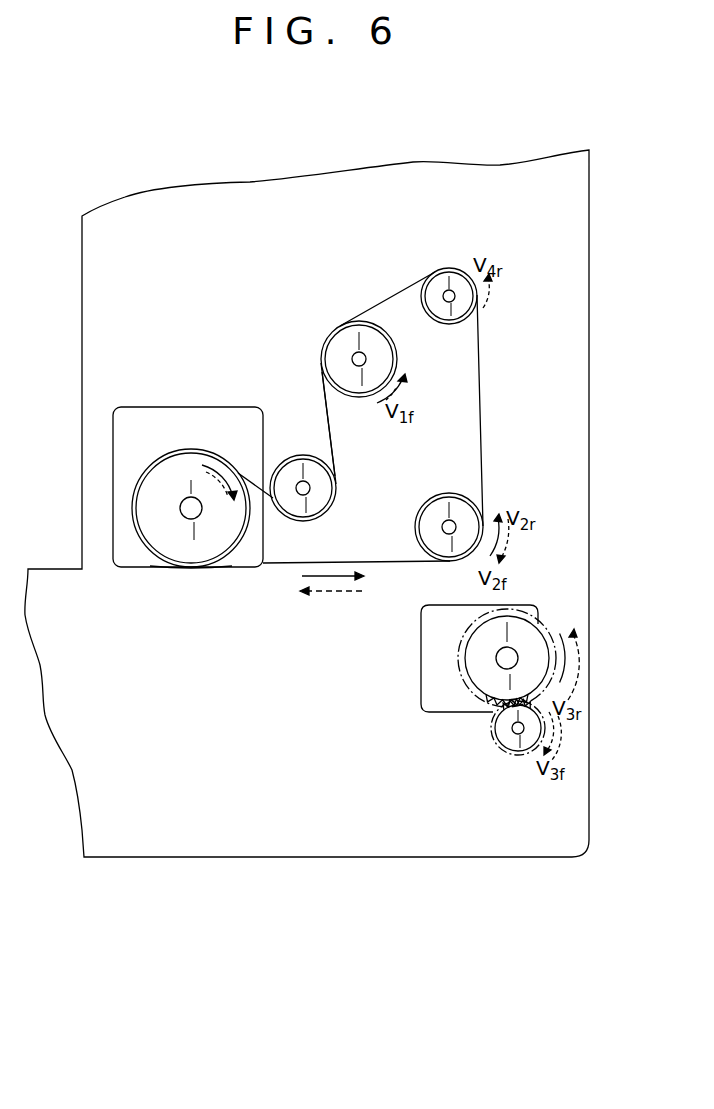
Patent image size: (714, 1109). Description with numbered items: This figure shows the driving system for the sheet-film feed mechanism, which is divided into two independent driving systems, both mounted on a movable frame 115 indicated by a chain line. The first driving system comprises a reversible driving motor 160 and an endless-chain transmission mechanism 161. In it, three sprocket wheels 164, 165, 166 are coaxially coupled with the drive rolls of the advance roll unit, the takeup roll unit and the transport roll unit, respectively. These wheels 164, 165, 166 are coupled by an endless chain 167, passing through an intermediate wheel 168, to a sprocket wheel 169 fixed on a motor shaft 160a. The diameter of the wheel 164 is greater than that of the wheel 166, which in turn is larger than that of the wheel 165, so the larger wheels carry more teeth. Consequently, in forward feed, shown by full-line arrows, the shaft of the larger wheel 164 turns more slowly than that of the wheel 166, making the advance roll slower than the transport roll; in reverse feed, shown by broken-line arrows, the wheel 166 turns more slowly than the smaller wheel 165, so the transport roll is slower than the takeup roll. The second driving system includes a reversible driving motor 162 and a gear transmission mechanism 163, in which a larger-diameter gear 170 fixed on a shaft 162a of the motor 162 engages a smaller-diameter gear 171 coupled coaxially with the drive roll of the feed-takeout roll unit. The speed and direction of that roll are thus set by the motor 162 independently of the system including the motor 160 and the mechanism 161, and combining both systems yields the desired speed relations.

The movable frame 115 is at (590, 460).
The reversible driving motor 160 is at (195, 407).
The motor shaft 160a is at (185, 500).
The endless-chain transmission mechanism 161 is at (480, 399).
The reversible driving motor 162 is at (425, 694).
The shaft 162a is at (520, 652).
The gear transmission mechanism 163 is at (492, 716).
The sprocket wheel 164 is at (344, 340).
The sprocket wheel 165 is at (470, 312).
The sprocket wheel 166 is at (438, 510).
The endless chain 167 is at (328, 428).
The intermediate wheel 168 is at (322, 500).
The sprocket wheel 169 is at (194, 556).
The larger-diameter gear 170 is at (520, 625).
The smaller-diameter gear 171 is at (514, 752).